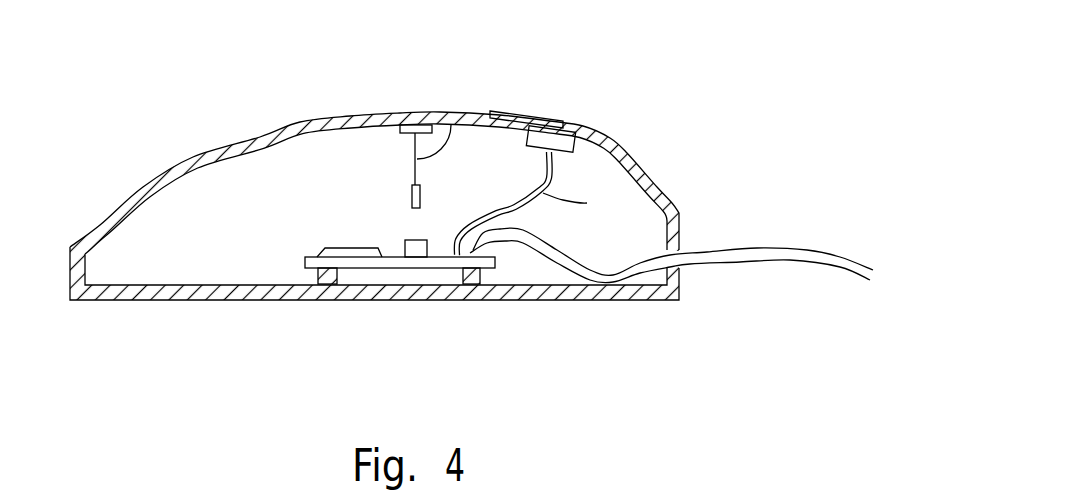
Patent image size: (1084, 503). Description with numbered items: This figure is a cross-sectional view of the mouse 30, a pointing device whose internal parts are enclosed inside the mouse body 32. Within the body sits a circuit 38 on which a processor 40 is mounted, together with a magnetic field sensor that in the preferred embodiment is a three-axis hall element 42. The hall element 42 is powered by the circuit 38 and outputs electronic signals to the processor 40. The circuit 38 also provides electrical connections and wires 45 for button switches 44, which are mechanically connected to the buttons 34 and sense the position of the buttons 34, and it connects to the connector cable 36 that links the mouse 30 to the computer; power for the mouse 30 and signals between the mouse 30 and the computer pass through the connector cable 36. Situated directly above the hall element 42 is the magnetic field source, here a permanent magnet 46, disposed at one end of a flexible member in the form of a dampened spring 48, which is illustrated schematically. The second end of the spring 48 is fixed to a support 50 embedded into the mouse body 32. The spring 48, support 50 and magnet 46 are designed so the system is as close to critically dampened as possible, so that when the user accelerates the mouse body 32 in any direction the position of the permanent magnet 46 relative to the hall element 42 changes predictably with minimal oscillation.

The mouse 30 is at (723, 360).
The mouse body 32 is at (193, 167).
The buttons 34 is at (510, 113).
The connector cable 36 is at (735, 255).
The circuit 38 is at (445, 263).
The processor 40 is at (352, 253).
The three-axis hall element 42 is at (415, 250).
The button switches 44 is at (559, 131).
The wires 45 is at (587, 203).
The permanent magnet 46 is at (412, 190).
The dampened spring 48 is at (451, 125).
The support 50 is at (408, 125).